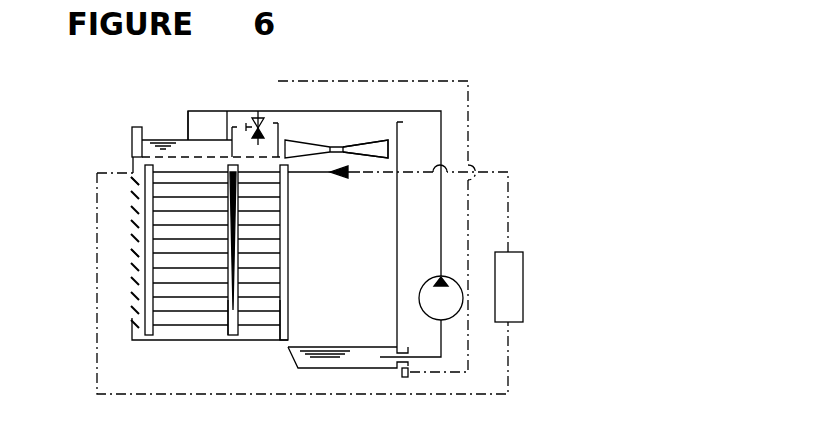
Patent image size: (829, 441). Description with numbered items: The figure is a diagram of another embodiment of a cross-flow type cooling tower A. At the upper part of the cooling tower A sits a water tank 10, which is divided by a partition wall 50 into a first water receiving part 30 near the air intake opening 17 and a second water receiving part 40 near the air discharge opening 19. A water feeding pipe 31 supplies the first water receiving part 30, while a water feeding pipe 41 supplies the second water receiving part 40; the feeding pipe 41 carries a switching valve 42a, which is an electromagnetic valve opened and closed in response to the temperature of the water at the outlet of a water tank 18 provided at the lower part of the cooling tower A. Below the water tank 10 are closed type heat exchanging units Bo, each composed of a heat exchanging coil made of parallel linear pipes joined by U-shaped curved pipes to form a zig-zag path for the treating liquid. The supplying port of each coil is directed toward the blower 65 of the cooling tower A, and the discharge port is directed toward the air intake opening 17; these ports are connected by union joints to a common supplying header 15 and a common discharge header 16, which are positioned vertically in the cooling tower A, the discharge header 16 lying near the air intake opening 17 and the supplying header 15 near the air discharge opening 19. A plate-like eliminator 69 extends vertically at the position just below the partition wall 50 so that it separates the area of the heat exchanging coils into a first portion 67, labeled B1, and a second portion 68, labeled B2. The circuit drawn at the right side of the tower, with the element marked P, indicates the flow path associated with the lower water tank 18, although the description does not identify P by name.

The water tank 10 is at (130, 119).
The first water receiving part 30 is at (165, 139).
The water feeding pipe 31 is at (197, 108).
The partition wall 50 is at (220, 140).
The switching valve 42a is at (250, 126).
The water feeding pipe 41 is at (262, 116).
The second water receiving part 40 is at (287, 140).
The air discharge opening 19 is at (334, 147).
The blower 65 is at (368, 142).
The cooling tower A is at (471, 122).
The pump unit P is at (455, 278).
The discharge header 16 is at (147, 233).
The air intake opening 17 is at (132, 265).
The closed type heat exchanging unit Bo is at (161, 281).
The first portion B1 is at (180, 284).
The second portion B2 is at (255, 284).
The first portion 67 is at (192, 320).
The second portion 68 is at (253, 320).
The eliminator 69 is at (230, 317).
The supplying header 15 is at (287, 313).
The water tank 18 is at (370, 357).